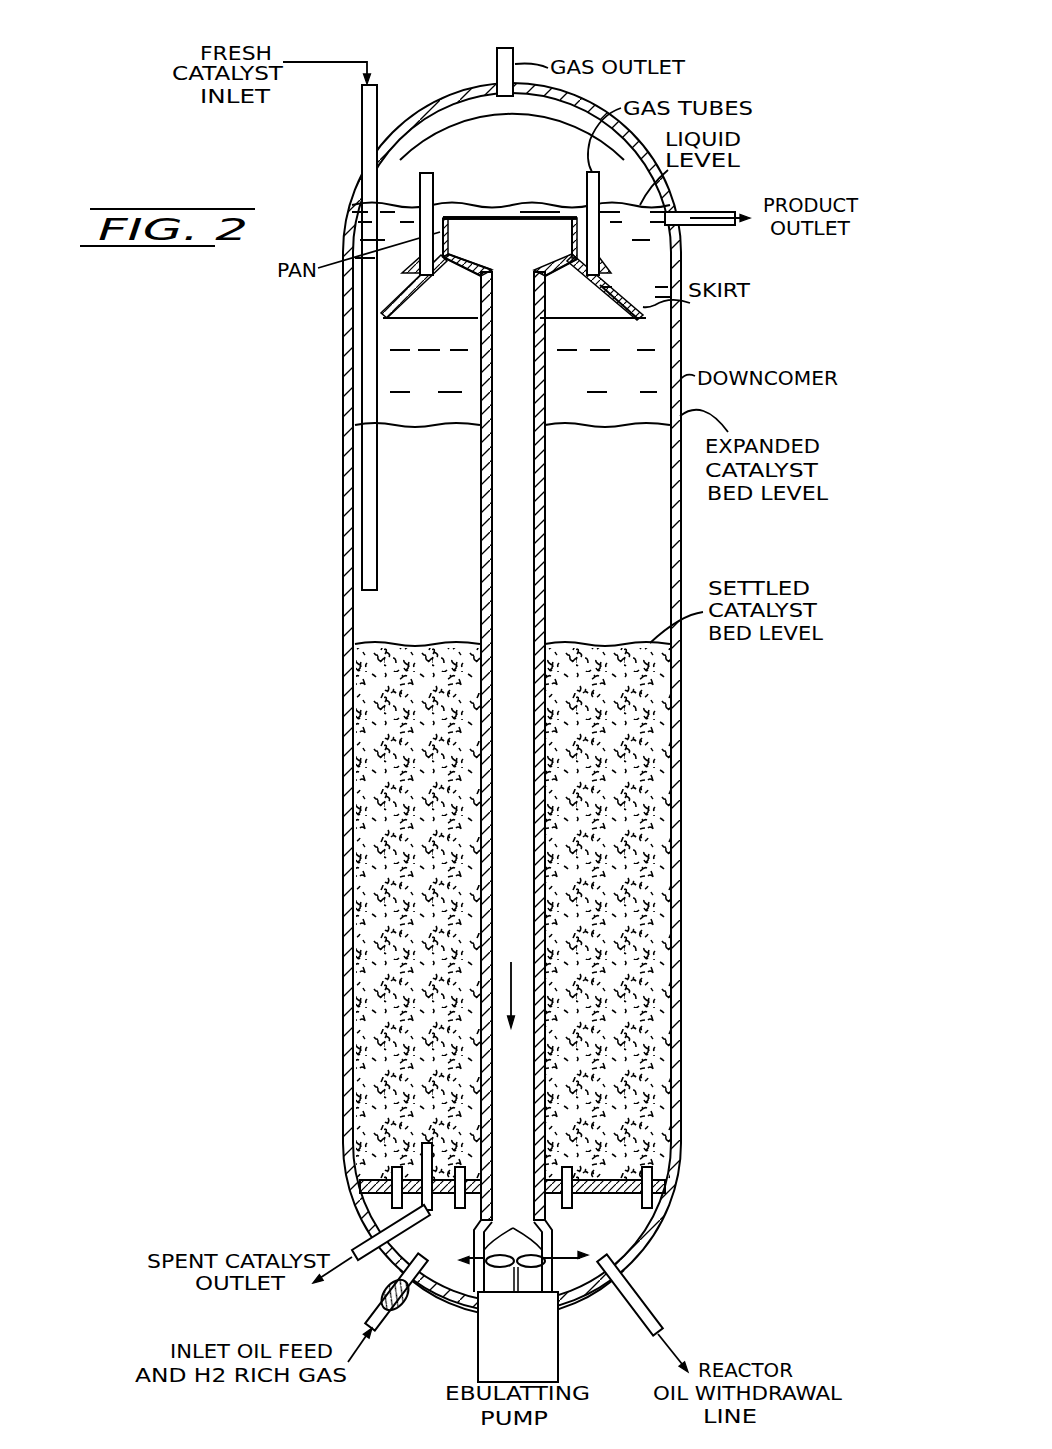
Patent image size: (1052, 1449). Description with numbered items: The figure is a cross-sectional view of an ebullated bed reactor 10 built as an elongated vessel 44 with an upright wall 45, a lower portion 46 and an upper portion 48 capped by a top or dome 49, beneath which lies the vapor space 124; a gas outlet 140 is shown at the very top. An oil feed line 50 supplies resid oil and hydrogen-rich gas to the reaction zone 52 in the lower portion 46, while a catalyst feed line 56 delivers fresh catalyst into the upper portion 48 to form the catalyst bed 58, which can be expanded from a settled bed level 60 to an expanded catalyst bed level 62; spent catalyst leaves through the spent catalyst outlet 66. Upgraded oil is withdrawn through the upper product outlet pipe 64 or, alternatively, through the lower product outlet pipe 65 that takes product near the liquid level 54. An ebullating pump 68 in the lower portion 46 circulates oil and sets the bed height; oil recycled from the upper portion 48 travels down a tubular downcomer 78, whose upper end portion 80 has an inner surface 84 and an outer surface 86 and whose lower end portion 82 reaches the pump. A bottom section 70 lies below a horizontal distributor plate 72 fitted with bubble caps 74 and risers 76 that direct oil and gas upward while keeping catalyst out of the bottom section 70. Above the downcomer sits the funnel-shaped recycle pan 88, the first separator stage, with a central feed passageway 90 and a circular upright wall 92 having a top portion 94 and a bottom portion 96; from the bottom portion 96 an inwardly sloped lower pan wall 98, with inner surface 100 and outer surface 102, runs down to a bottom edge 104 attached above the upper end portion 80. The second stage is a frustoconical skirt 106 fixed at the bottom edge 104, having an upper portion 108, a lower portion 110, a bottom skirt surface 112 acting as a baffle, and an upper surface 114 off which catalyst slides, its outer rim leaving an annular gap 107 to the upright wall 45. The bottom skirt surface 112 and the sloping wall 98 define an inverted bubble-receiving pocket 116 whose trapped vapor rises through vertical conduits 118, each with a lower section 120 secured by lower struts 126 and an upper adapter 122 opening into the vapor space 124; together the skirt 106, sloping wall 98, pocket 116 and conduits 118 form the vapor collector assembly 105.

The ebullated bed reactor 10 is at (482, 78).
The gas outlet 140 is at (513, 66).
The top, roof or dome 49 is at (531, 96).
The catalyst feed line 56 is at (362, 132).
The liquid level 54 is at (408, 212).
The top portion of upright wall 94 is at (456, 209).
The recycle pan 88 is at (452, 212).
The vapor space 124 is at (545, 177).
The upper open ended section or adapter 122 is at (587, 190).
The vapor riser or vertical conduit 118 is at (599, 174).
The upper product outlet pipe 64 is at (690, 212).
The upright wall of recycle pan 92 is at (460, 237).
The inwardly sloped flared lower pan wall 98 is at (472, 262).
The feed passageway 90 is at (512, 275).
The inner surface of sloping pan wall 100 is at (565, 236).
The lower section of conduit 120 is at (605, 258).
The bottom portion of upright wall 96 is at (608, 270).
The lower struts 126 is at (413, 278).
The upper portion of skirt 108 is at (473, 296).
The outer surface of sloping pan wall 102 is at (583, 296).
The upper surface of skirt 114 is at (655, 308).
The skirt 106 is at (385, 305).
The lower portion of skirt 110 is at (394, 306).
The bottom edge 104 is at (512, 305).
The bottom skirt surface 112 is at (570, 307).
The annular passage or gap 107 is at (656, 318).
The vapor collector and assembly 105 is at (449, 308).
The upper end portion of downcomer 80 is at (481, 320).
The bubble-receiving pocket 116 is at (587, 355).
The upper portion of vessel 48 is at (343, 370).
The upright wall 45 is at (672, 372).
The outer surface of downcomer upper end 86 is at (482, 394).
The inner surface of downcomer upper end 84 is at (511, 476).
The expanded catalyst bed level 62 is at (660, 428).
The downcomer 78 is at (488, 494).
The reaction zone 52 is at (372, 618).
The settled bed level 60 is at (678, 640).
The catalyst bed 58 is at (358, 773).
The elongated vessel 44 is at (683, 867).
The lower portion of vessel 46 is at (345, 1080).
The lower end portion of downcomer 82 is at (513, 1000).
The bubble caps 74 is at (668, 1168).
The spent catalyst outlet 66 is at (363, 1243).
The distributor plate 72 is at (583, 1200).
The risers 76 is at (672, 1206).
The bottom section 70 is at (641, 1237).
The lower product outlet pipe 65 is at (645, 1296).
The oil feed line 50 is at (388, 1320).
The ebullating pump 68 is at (560, 1342).